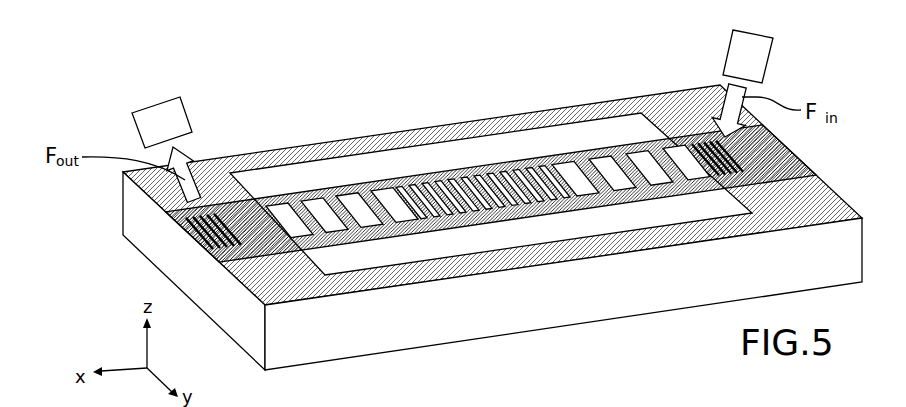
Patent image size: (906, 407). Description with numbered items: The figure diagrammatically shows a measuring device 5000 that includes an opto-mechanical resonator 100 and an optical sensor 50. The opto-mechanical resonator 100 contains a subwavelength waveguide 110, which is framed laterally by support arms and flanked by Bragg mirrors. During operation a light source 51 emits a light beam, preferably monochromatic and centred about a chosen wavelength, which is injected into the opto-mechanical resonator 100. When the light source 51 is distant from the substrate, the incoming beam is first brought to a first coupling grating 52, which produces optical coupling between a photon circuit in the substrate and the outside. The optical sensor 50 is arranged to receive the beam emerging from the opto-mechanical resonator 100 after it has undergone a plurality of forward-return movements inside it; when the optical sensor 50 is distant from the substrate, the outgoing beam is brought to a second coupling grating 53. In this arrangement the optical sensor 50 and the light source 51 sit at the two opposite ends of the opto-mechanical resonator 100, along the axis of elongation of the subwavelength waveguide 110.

The measuring device 5000 is at (247, 78).
The opto-mechanical resonator 100 is at (330, 123).
The subwavelength waveguide 110 is at (543, 156).
The optical sensor 50 is at (138, 129).
The light source 51 is at (755, 55).
The first coupling grating 52 is at (702, 132).
The second coupling grating 53 is at (265, 241).